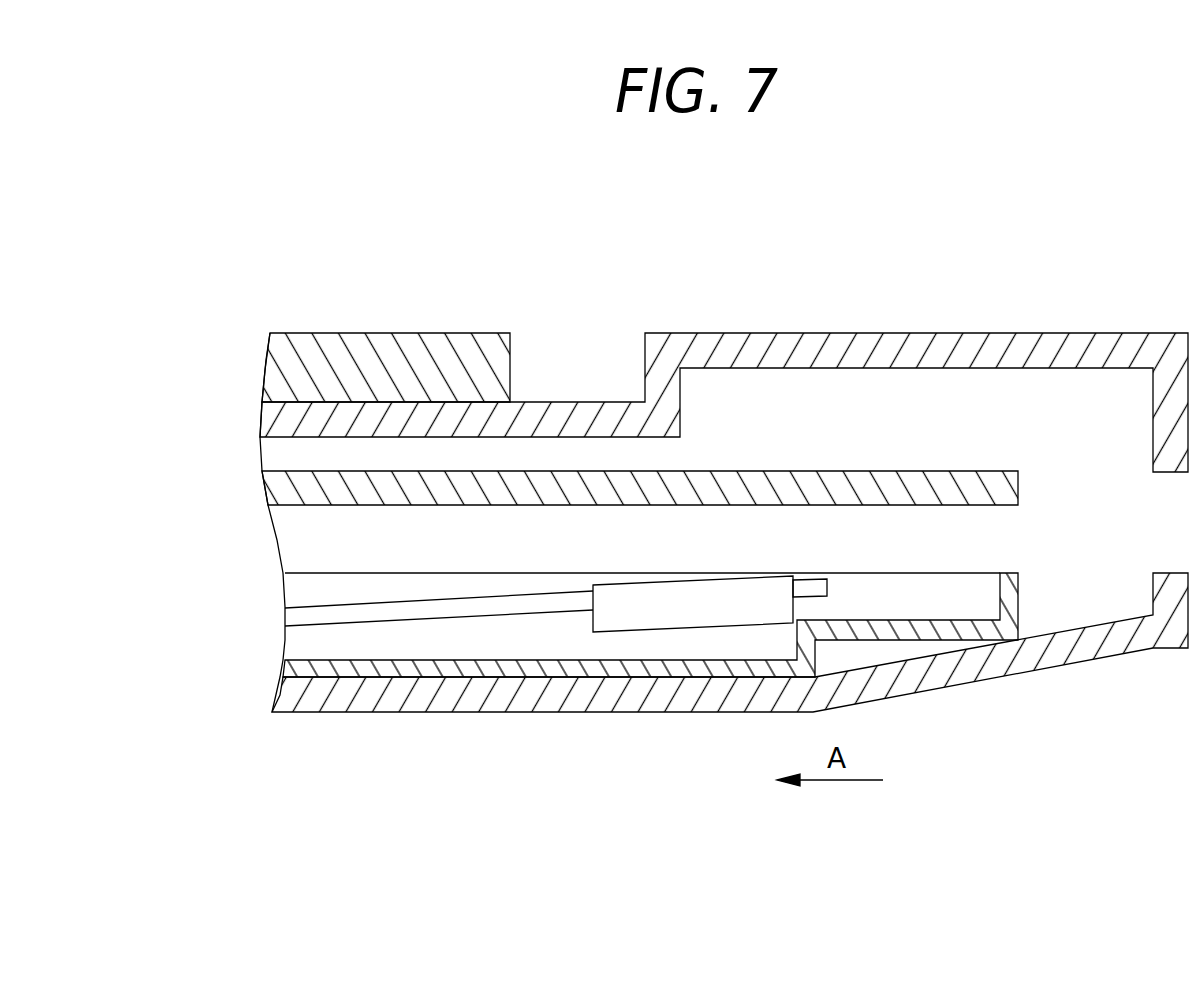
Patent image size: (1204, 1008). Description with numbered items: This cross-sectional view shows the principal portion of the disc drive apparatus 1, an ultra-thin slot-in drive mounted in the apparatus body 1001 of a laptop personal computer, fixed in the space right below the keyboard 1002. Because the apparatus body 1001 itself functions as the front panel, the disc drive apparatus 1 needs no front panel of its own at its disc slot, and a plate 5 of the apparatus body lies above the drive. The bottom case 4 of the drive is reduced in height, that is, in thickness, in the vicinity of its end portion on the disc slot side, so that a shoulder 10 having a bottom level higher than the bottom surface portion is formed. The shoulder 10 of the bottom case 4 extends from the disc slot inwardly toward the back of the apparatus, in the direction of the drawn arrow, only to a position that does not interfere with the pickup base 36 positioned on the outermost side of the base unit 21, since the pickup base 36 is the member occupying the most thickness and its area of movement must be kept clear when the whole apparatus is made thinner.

The disc drive apparatus 1 is at (724, 383).
The apparatus body 1001 is at (1030, 345).
The keyboard 1002 is at (417, 357).
The partition plate 5 is at (724, 470).
The bottom case 4 is at (583, 672).
The shoulder 10 is at (937, 622).
The pickup base 36 is at (697, 603).
The base unit 21 is at (332, 591).